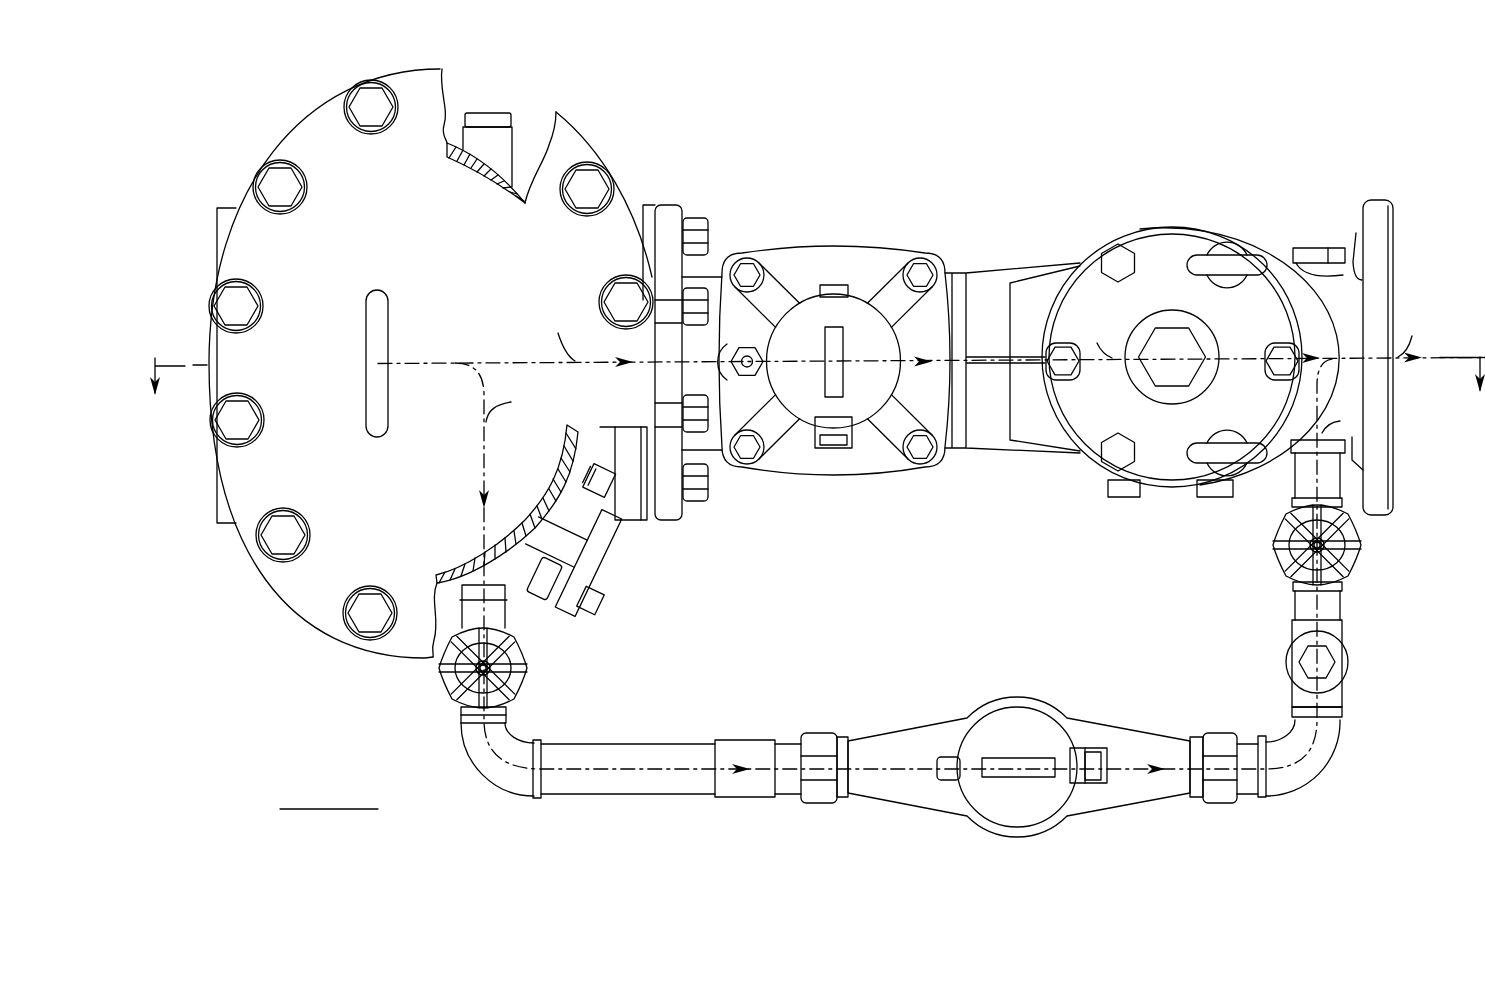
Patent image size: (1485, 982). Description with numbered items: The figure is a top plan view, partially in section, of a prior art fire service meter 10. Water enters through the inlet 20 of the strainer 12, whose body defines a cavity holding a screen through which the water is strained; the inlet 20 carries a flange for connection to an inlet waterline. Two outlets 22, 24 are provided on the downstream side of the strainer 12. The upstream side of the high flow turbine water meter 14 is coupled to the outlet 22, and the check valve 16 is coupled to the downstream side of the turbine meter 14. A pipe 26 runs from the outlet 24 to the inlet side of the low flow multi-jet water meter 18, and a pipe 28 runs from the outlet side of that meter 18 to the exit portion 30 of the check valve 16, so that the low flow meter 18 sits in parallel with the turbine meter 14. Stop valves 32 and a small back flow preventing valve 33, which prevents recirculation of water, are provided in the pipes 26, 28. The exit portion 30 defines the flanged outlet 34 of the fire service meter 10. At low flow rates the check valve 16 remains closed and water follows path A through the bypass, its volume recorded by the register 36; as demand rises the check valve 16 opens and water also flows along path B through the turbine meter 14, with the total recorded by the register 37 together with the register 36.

The fire service meter 10 is at (830, 169).
The strainer 12 is at (610, 172).
The high flow turbine water meter 14 is at (873, 253).
The check valve 16 is at (1236, 235).
The low flow multi-jet water meter 18 is at (1140, 815).
The inlet 20 is at (217, 232).
The outlet 22 is at (645, 206).
The outlet 24 is at (517, 555).
The pipe 26 is at (646, 743).
The pipe 28 is at (1338, 750).
The exit portion 30 is at (1356, 268).
The stop valve 32 is at (518, 672).
The back flow preventing valve 33 is at (1347, 662).
The outlet 34 is at (1393, 288).
The register 36 is at (1020, 757).
The register 37 is at (845, 358).